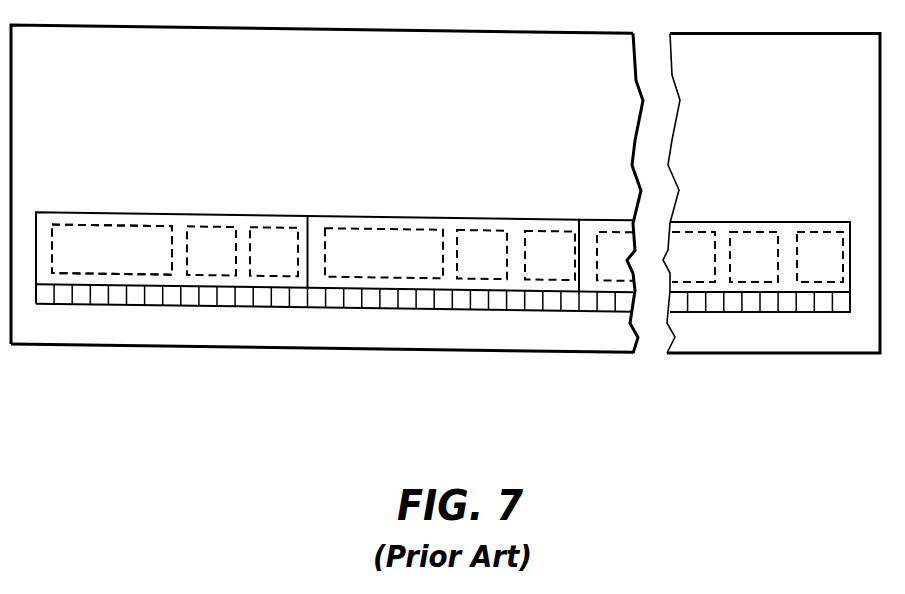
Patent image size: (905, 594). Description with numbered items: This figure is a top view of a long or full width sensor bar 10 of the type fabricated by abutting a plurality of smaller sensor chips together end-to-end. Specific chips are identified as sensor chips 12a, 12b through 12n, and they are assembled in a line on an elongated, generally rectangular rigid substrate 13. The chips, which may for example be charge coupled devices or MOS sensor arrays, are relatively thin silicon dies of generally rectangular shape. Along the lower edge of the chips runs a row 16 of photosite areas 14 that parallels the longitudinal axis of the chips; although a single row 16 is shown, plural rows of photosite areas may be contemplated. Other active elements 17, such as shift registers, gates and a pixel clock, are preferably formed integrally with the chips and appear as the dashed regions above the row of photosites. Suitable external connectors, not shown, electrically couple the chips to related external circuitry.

The sensor bar 10 is at (445, 241).
The sensor chip 12a is at (113, 211).
The sensor chip 12b is at (385, 214).
The sensor chip 12n is at (777, 223).
The substrate 13 is at (397, 350).
The photosite areas 14 is at (45, 294).
The row 16 is at (172, 306).
The active elements 17 is at (153, 235).